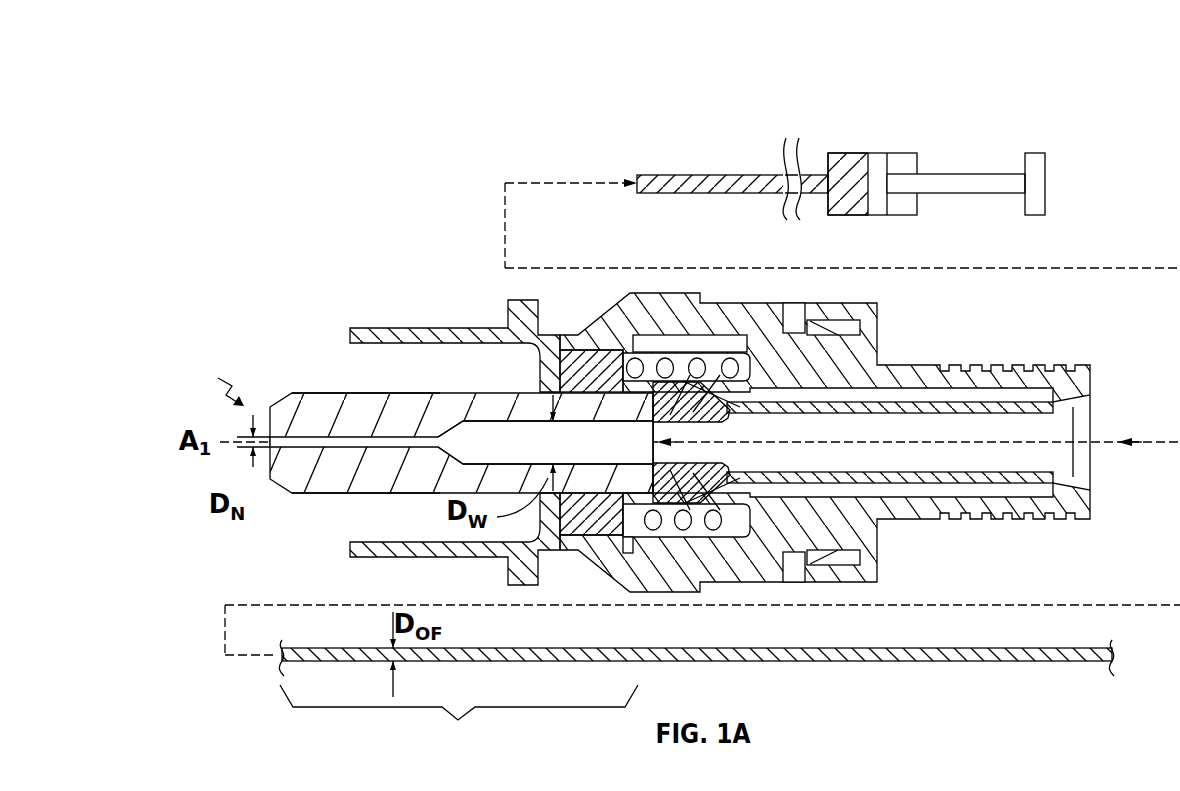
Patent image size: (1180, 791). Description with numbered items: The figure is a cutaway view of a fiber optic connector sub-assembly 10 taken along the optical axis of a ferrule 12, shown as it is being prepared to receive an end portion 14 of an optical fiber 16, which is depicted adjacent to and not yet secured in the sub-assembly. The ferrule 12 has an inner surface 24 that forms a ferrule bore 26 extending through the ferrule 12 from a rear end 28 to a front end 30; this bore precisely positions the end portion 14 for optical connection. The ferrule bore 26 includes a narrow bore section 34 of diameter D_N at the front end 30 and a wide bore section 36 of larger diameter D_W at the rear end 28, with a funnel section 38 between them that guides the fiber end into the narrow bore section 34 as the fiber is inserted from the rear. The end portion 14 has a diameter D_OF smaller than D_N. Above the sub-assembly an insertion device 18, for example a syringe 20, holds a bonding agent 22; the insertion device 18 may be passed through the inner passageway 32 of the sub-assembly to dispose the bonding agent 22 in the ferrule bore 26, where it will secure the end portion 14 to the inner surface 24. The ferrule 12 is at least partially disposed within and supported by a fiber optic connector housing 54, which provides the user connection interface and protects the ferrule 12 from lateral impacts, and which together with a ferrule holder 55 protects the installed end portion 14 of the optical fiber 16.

The fiber optic connector sub-assembly 10 is at (1022, 112).
The ferrule 12 is at (295, 413).
The end portion 14 is at (459, 718).
The optical fiber 16 is at (977, 662).
The insertion device 18 is at (886, 141).
The syringe 20 is at (1045, 184).
The bonding agent 22 is at (853, 157).
The inner surface 24 is at (407, 443).
The ferrule bore 26 is at (330, 437).
The rear end 28 is at (664, 433).
The front end 30 is at (218, 382).
The inner passageway 32 is at (963, 432).
The narrow bore section 34 is at (353, 450).
The wide bore section 36 is at (500, 420).
The funnel section 38 is at (438, 436).
The fiber optic connector housing 54 is at (438, 328).
The ferrule holder 55 is at (582, 365).